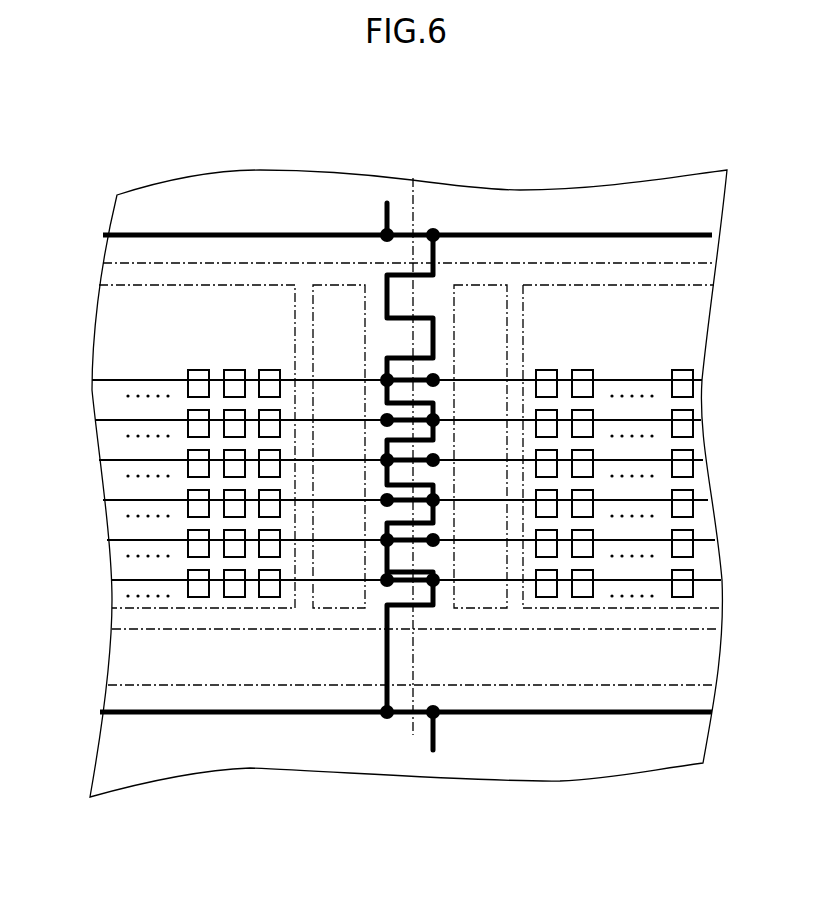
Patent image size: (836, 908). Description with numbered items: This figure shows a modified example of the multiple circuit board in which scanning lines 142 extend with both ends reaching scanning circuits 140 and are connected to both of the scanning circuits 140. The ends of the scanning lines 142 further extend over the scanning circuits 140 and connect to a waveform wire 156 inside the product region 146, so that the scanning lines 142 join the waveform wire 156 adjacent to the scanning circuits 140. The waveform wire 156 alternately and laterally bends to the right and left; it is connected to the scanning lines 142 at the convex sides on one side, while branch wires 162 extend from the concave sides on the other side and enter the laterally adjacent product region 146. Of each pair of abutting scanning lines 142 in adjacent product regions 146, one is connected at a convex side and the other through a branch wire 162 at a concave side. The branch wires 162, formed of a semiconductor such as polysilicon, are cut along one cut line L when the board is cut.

The scanning circuit 140 is at (336, 285).
The scanning line 142 is at (122, 380).
The product region 146 is at (253, 668).
The waveform wire 156 is at (387, 664).
The branch wire 162 is at (400, 585).
The cut line L is at (677, 263).